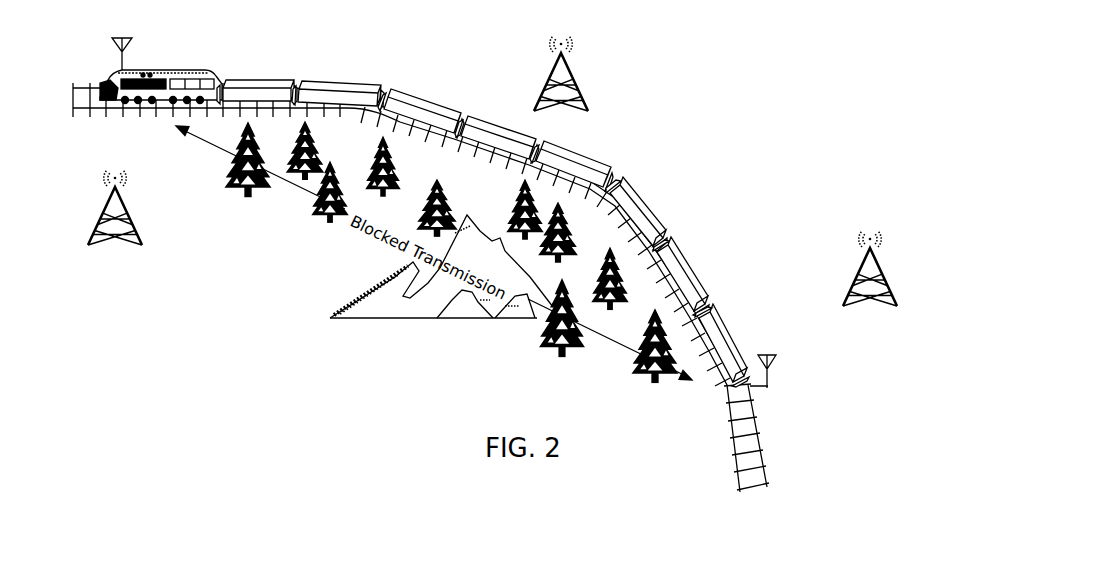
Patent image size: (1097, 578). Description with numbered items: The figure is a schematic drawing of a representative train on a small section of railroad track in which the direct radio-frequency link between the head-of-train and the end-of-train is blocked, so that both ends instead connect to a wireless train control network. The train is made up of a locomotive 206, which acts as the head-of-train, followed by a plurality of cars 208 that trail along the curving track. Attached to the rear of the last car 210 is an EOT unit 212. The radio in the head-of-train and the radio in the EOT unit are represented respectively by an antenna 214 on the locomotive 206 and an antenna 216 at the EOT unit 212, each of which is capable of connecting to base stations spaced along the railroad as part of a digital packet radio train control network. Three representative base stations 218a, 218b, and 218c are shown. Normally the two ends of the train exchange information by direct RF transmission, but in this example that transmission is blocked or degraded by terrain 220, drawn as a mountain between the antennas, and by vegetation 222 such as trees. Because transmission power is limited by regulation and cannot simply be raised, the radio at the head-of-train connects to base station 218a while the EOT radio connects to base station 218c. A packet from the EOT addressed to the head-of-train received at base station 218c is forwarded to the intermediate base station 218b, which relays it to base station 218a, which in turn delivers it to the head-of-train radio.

The locomotive 206 is at (203, 73).
The cars 208 is at (393, 95).
The last car 210 is at (720, 333).
The EOT unit 212 is at (731, 389).
The antenna 214 is at (127, 38).
The antenna 216 is at (768, 381).
The base station 218a is at (116, 238).
The base station 218b is at (578, 93).
The base station 218c is at (882, 268).
The terrain 220 is at (370, 343).
The vegetation 222 is at (283, 225).